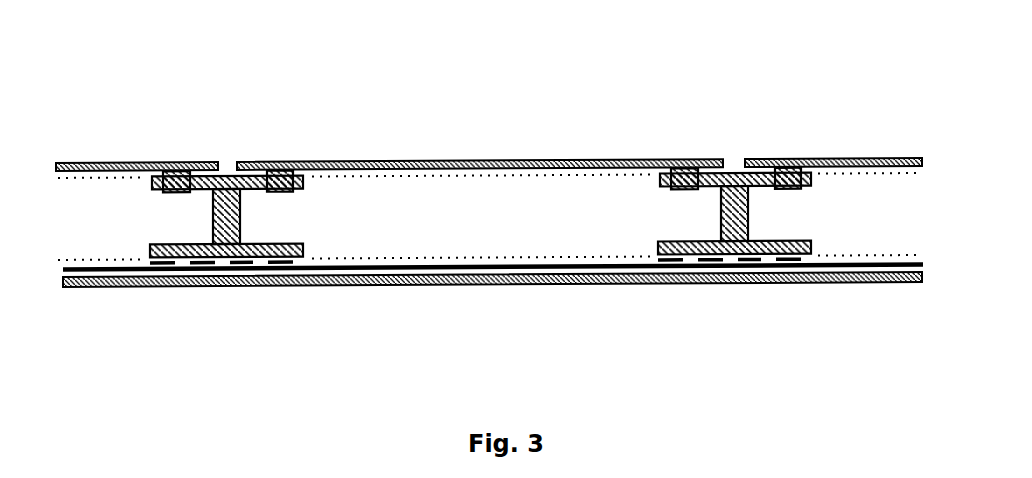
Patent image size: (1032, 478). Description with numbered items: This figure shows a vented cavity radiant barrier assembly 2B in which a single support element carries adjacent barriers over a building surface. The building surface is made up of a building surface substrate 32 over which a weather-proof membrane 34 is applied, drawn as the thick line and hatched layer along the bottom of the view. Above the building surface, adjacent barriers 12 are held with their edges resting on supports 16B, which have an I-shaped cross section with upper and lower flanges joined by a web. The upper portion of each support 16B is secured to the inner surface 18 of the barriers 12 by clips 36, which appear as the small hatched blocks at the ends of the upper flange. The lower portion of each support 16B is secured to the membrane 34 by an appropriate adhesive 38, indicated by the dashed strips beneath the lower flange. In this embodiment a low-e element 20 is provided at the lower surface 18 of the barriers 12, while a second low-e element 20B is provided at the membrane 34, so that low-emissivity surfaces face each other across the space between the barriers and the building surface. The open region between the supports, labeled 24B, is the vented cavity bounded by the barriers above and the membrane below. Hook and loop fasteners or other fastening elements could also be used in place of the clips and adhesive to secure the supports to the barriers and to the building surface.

The vented cavity radiant barrier assembly 2B is at (473, 77).
The barrier 12 is at (489, 164).
The inner surface 18 is at (432, 168).
The low-e element 20 is at (487, 175).
The low-e element 20B is at (487, 257).
The support 16B is at (226, 217).
The clip 36 is at (228, 182).
The cavity 24B is at (614, 226).
The adhesive 38 is at (729, 259).
The building surface substrate 32 is at (493, 266).
The weather-proof membrane 34 is at (492, 279).